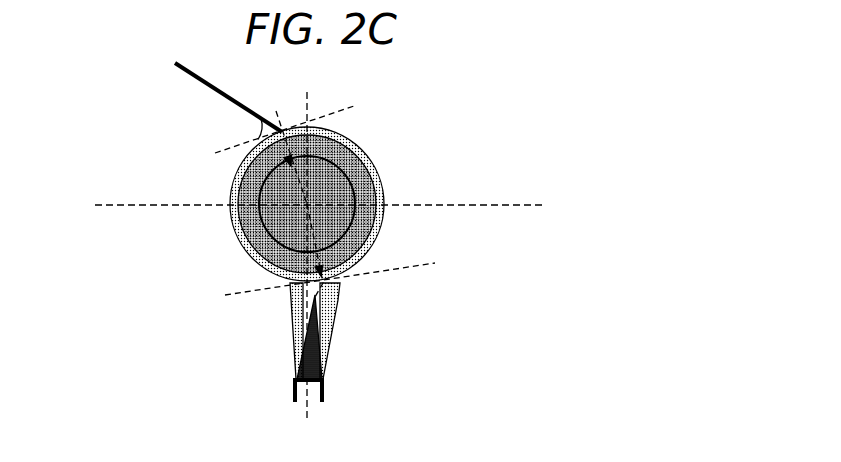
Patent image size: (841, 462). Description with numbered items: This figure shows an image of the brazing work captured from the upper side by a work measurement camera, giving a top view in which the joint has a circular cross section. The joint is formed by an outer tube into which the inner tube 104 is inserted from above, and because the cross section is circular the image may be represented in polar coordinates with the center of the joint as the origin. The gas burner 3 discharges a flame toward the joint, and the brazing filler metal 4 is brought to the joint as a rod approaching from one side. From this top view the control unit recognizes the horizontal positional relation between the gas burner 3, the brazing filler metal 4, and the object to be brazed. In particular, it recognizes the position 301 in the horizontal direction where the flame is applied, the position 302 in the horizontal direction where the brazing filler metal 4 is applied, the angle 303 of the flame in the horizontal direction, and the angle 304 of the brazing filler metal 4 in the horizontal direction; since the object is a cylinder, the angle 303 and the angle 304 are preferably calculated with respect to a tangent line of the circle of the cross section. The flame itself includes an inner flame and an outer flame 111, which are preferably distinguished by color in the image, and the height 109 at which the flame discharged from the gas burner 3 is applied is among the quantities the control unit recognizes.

The brazing filler metal 4 is at (201, 82).
The angle of the brazing filler metal in the horizontal direction 304 is at (258, 133).
The position in the horizontal direction where the brazing filler metal is applied 302 is at (261, 189).
The position in the horizontal direction where the flame is applied 301 is at (346, 150).
The inner tube 104 is at (380, 227).
The angle of the flame in the horizontal direction 303 is at (342, 292).
The height at which the flame is applied 109 is at (312, 333).
The outer flame 111 is at (330, 338).
The gas burner 3 is at (295, 385).